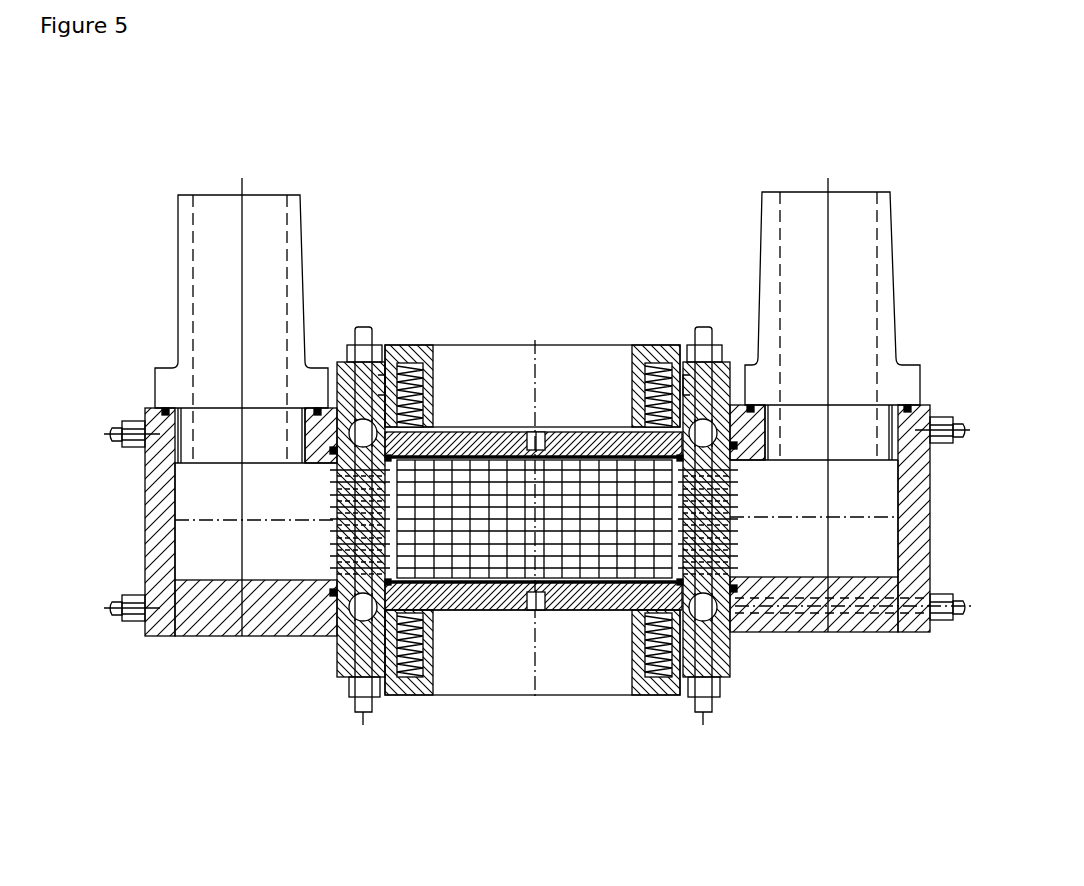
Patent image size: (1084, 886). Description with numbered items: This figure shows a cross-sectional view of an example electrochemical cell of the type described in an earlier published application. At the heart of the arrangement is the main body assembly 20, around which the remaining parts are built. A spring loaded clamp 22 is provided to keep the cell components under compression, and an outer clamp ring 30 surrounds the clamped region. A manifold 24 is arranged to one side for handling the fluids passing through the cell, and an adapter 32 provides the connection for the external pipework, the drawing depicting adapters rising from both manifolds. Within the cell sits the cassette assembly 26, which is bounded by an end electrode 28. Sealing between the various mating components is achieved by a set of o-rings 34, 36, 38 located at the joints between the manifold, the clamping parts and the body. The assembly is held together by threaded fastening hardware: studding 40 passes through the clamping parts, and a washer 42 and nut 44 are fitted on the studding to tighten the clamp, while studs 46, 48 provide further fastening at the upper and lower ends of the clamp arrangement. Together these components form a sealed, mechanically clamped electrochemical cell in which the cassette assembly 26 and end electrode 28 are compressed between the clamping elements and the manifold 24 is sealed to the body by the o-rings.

The main body assembly 20 is at (367, 472).
The spring loaded clamp 22 is at (633, 345).
The manifold 24 is at (897, 633).
The cassette assembly 26 is at (551, 590).
The end electrode 28 is at (527, 612).
The outer clamp ring 30 is at (340, 362).
The adapter 32 is at (758, 240).
The o-ring 34 is at (163, 410).
The o-ring 36 is at (742, 588).
The o-ring 38 is at (436, 434).
The studding 40 is at (735, 614).
The washer 42 is at (726, 685).
The nut 44 is at (718, 700).
The stud 46 is at (698, 325).
The stud 48 is at (358, 707).